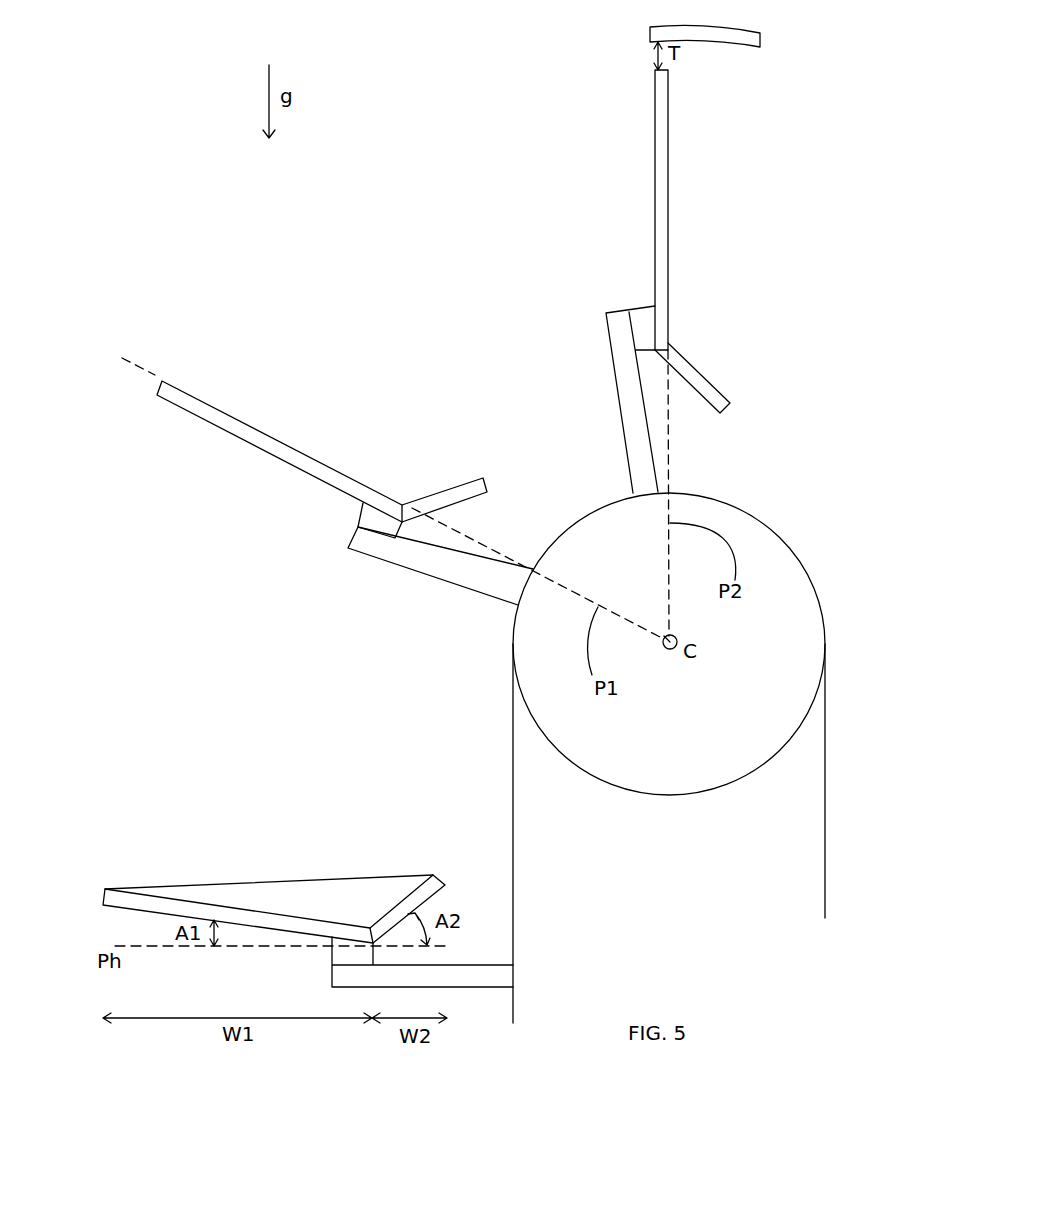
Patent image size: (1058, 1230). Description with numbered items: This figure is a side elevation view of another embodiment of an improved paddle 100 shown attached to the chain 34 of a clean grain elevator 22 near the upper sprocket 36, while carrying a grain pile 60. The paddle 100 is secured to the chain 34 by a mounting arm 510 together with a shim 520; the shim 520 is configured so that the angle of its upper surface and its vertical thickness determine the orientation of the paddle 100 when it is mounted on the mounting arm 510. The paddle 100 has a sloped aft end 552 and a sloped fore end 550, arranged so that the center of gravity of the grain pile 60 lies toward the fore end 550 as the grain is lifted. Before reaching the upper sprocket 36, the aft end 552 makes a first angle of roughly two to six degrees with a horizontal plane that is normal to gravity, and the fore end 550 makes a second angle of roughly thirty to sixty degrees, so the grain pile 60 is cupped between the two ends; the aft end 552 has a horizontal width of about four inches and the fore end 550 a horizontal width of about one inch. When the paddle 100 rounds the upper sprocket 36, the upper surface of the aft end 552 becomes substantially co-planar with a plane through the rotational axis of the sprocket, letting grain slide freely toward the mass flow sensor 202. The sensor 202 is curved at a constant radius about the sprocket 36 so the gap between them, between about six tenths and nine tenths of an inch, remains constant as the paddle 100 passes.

The mass flow sensor 202 is at (715, 42).
The elevator 22 is at (530, 390).
The upper sprocket 36 is at (682, 795).
The shim 520 is at (357, 512).
The mounting arm 510 is at (470, 593).
The chain 34 is at (513, 832).
The paddle 100 is at (297, 867).
The grain pile 60 is at (228, 888).
The sloped aft end 552 is at (137, 912).
The sloped fore end 550 is at (427, 877).